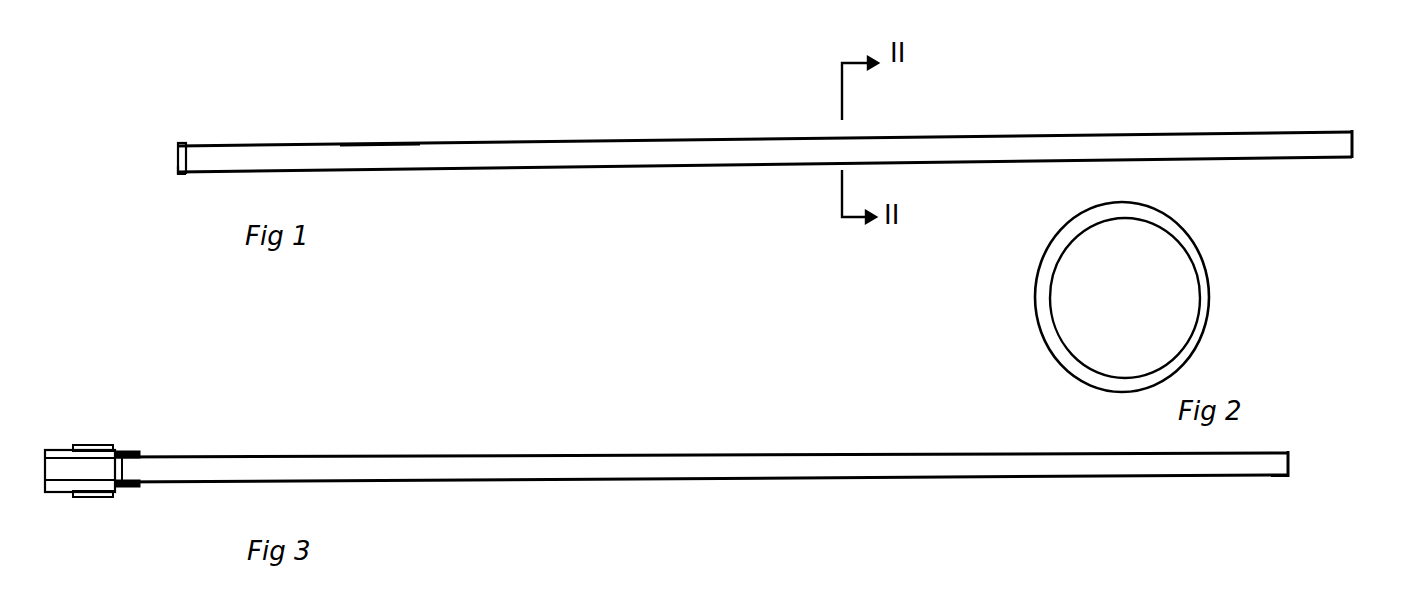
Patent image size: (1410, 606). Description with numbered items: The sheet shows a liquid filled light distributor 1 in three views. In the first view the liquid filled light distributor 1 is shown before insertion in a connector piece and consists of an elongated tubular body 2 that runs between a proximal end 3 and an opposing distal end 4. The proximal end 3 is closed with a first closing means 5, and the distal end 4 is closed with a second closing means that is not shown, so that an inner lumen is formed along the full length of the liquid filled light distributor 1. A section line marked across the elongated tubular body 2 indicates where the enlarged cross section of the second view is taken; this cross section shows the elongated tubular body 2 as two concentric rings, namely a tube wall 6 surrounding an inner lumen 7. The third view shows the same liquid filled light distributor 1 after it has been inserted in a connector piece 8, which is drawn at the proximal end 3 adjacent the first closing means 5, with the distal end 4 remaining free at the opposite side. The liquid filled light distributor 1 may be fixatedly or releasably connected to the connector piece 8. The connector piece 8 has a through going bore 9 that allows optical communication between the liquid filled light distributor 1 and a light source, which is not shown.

In FIG. 1, the liquid filled light distributor 1 is at (1183, 136).
In FIG. 3, the liquid filled light distributor 1 is at (817, 469).
In FIG. 1, the elongated tubular body 2 is at (378, 146).
In FIG. 1, the proximal end 3 is at (198, 140).
In FIG. 3, the proximal end 3 is at (140, 478).
In FIG. 1, the distal end 4 is at (1362, 104).
In FIG. 3, the distal end 4 is at (1280, 468).
In FIG. 1, the first closing means 5 is at (176, 176).
In FIG. 3, the first closing means 5 is at (123, 451).
In FIG. 2, the tube wall 6 is at (1206, 298).
In FIG. 2, the inner lumen 7 is at (1125, 298).
In FIG. 3, the connector piece 8 is at (85, 445).
In FIG. 3, the through going bore 9 is at (65, 470).